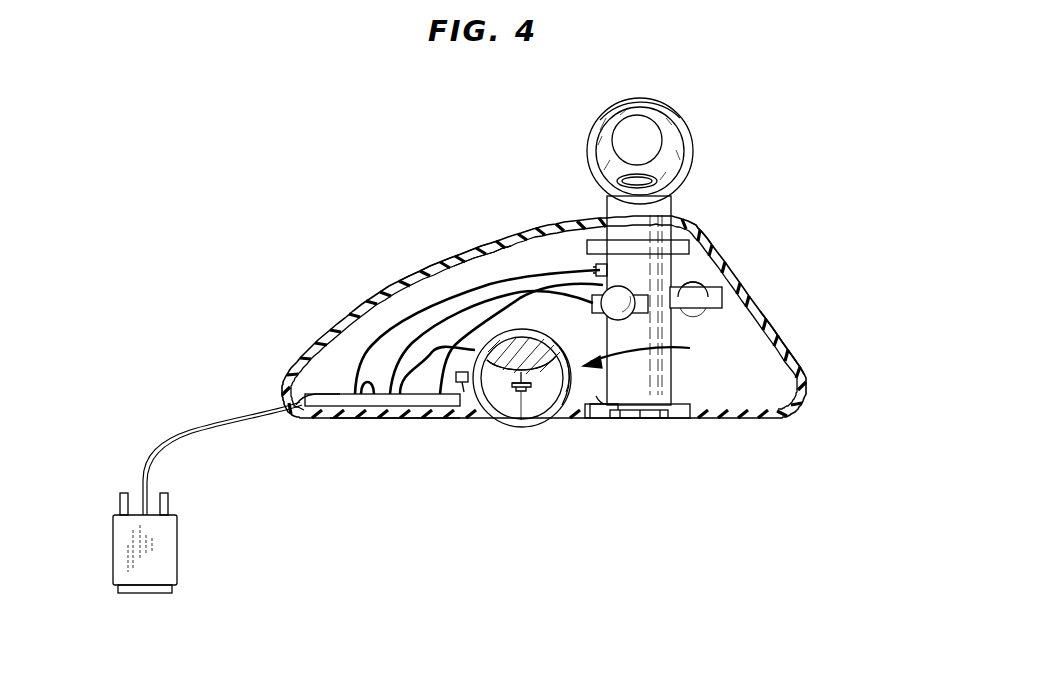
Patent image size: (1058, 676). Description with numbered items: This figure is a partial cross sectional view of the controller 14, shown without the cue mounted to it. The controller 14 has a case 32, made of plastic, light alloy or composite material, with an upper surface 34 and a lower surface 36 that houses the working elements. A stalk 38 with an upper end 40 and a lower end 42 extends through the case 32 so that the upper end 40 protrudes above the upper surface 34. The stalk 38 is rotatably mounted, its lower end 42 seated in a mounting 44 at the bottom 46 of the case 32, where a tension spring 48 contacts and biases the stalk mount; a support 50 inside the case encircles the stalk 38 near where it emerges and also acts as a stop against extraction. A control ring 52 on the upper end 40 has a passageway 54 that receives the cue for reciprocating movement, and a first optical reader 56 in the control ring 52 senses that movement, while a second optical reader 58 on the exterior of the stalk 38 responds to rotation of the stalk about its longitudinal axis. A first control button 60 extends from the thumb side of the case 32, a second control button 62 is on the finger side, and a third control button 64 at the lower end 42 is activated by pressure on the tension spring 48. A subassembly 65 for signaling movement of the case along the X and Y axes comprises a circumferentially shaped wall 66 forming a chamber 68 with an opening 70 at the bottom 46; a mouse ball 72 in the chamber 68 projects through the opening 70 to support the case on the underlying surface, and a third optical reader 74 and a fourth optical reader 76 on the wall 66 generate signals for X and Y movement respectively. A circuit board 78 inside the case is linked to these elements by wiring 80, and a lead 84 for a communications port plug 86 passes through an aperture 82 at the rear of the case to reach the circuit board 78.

The controller 14 is at (400, 268).
The case 32 is at (437, 262).
The upper surface 34 is at (475, 240).
The lower surface 36 is at (393, 420).
The stalk 38 is at (680, 212).
The upper end 40 is at (688, 192).
The lower end 42 is at (592, 420).
The mounting 44 is at (678, 420).
The bottom 46 is at (790, 398).
The tension spring 48 is at (614, 420).
The support 50 is at (690, 252).
The control ring 52 is at (682, 122).
The passageway 54 is at (638, 128).
The first optical reader 56 is at (620, 180).
The second optical reader 58 is at (596, 268).
The first control button 60 is at (620, 310).
The second control button 62 is at (696, 284).
The third control button 64 is at (640, 420).
The subassembly 65 is at (650, 354).
The circumferentially shaped wall 66 is at (535, 332).
The chamber 68 is at (558, 420).
The opening 70 is at (487, 424).
The mouse ball 72 is at (536, 412).
The third optical reader 74 is at (521, 420).
The fourth optical reader 76 is at (462, 420).
The circuit board 78 is at (310, 415).
The wiring 80 is at (360, 345).
The aperture 82 is at (300, 388).
The lead 84 is at (158, 438).
The communications port plug 86 is at (128, 550).